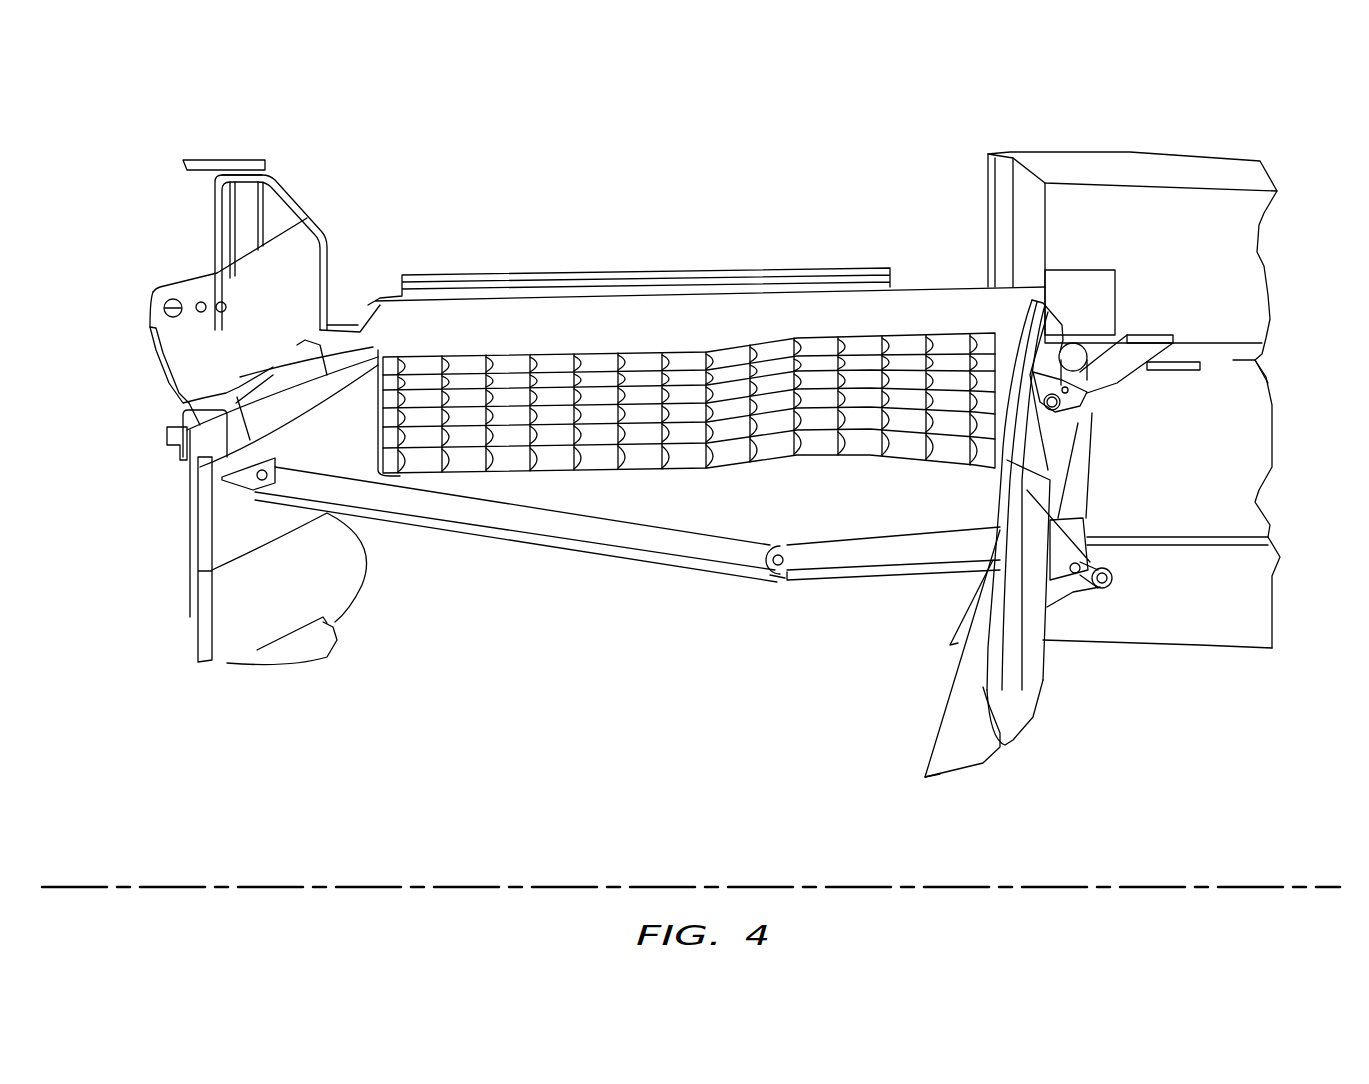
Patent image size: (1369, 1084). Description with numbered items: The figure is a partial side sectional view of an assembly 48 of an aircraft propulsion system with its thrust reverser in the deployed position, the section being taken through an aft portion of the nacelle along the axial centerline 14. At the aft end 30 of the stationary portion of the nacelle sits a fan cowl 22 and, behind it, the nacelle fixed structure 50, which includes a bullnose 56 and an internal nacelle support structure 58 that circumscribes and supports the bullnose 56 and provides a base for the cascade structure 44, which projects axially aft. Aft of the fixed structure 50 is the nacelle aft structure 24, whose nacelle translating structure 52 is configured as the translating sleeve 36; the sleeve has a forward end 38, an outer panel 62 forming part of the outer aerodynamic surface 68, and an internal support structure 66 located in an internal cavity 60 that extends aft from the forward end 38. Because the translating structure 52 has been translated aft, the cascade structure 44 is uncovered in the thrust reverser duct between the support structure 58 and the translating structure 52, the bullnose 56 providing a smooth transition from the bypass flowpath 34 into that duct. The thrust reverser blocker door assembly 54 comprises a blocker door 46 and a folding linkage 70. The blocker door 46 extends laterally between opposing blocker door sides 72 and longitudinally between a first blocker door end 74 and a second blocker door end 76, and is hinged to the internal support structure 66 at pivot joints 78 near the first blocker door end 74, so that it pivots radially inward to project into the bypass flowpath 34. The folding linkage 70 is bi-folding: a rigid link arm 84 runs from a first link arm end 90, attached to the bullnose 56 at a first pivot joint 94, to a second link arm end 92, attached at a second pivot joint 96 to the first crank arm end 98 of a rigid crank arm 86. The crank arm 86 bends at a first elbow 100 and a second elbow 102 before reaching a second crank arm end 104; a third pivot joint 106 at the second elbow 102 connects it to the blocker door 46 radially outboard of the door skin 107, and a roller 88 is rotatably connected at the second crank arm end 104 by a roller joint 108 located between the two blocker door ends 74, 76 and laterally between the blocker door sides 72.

The axial centerline 14 is at (1330, 882).
The fan cowl 22 is at (237, 160).
The nacelle aft structure 24 is at (1153, 198).
The aft end of stationary portion of the nacelle 30 is at (276, 172).
The bypass flowpath 34 is at (311, 823).
The translating sleeve 36 is at (1153, 198).
The forward end of translating sleeve 38 is at (985, 153).
The cascade structure 44 is at (638, 264).
The blocker door 46 is at (1020, 745).
The assembly 48 is at (118, 145).
The nacelle fixed structure 50 is at (297, 204).
The nacelle translating structure 52 is at (1138, 142).
The thrust reverser blocker door assembly 54 is at (890, 693).
The bullnose 56 is at (240, 640).
The internal nacelle support structure 58 is at (152, 414).
The internal cavity 60 is at (1063, 212).
The outer panel 62 is at (1225, 152).
The internal support structure 66 is at (1255, 358).
The outer aerodynamic surface 68 is at (1065, 152).
The folding linkage 70 is at (627, 577).
The blocker door side 72 is at (921, 693).
The first blocker door end 74 is at (999, 518).
The second blocker door end 76 is at (960, 780).
The pivot joint 78 is at (1075, 403).
The link arm 84 is at (495, 535).
The crank arm 86 is at (873, 565).
The roller 88 is at (1112, 600).
The first link arm end 90 is at (247, 490).
The second link arm end 92 is at (748, 631).
The first pivot joint 94 is at (268, 468).
The second pivot joint 96 is at (779, 553).
The first crank arm end 98 is at (777, 578).
The first elbow 100 is at (1087, 520).
The second elbow 102 is at (1073, 582).
The second crank arm end 104 is at (1112, 580).
The third pivot joint 106 is at (1105, 568).
The skin 107 is at (965, 698).
The roller joint 108 is at (1120, 588).